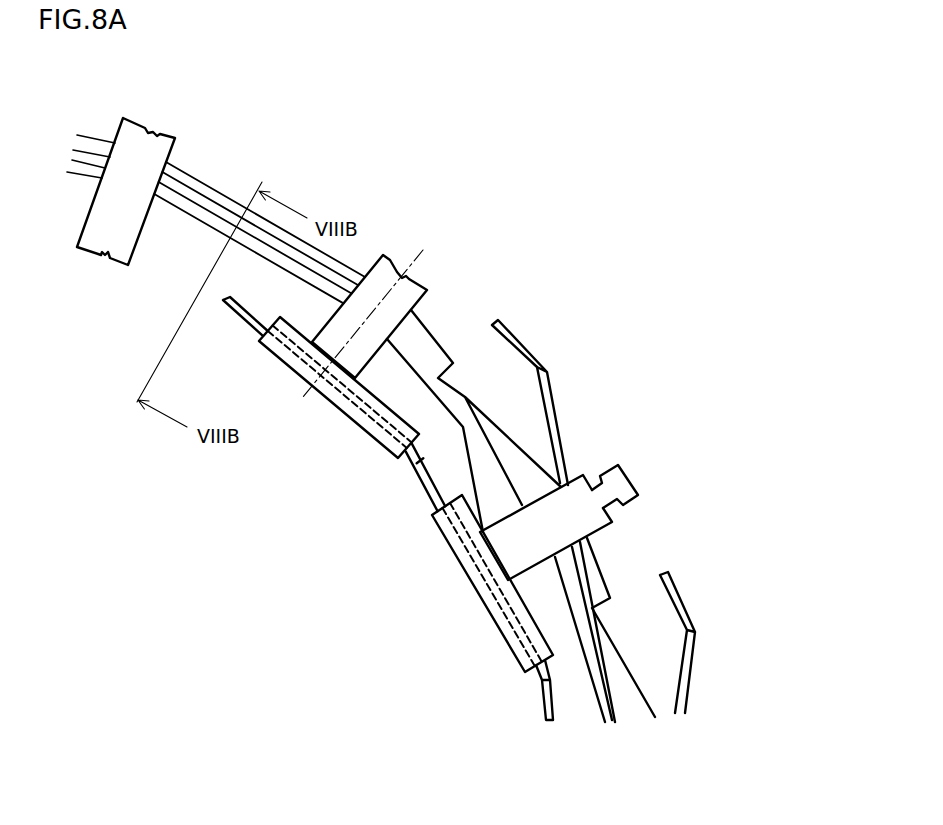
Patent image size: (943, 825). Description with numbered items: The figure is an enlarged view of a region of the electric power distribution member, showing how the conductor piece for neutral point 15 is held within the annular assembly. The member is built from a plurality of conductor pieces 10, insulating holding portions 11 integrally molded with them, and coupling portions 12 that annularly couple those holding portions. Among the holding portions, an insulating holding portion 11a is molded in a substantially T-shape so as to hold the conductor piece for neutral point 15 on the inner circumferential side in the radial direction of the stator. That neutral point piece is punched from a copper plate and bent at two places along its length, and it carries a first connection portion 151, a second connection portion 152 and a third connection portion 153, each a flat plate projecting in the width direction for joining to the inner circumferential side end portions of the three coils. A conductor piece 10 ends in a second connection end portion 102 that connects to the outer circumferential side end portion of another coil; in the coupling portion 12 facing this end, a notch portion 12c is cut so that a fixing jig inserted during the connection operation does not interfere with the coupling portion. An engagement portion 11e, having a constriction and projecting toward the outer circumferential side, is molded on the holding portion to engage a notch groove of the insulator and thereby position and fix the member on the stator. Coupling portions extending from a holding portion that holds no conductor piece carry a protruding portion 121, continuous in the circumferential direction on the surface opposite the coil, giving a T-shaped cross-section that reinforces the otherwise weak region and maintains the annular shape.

The protruding portion 121 is at (197, 202).
The insulating holding portion 11 is at (528, 367).
The insulating holding portion 11a is at (387, 273).
The engagement portion 11e is at (620, 483).
The coupling portion 12 is at (423, 353).
The notch portion 12c is at (440, 367).
The second connection end portion 102 is at (522, 340).
The conductor piece 10 is at (558, 410).
The conductor piece for neutral point 15 is at (364, 518).
The first connection portion 151 is at (538, 697).
The second connection portion 152 is at (437, 480).
The third connection portion 153 is at (233, 317).